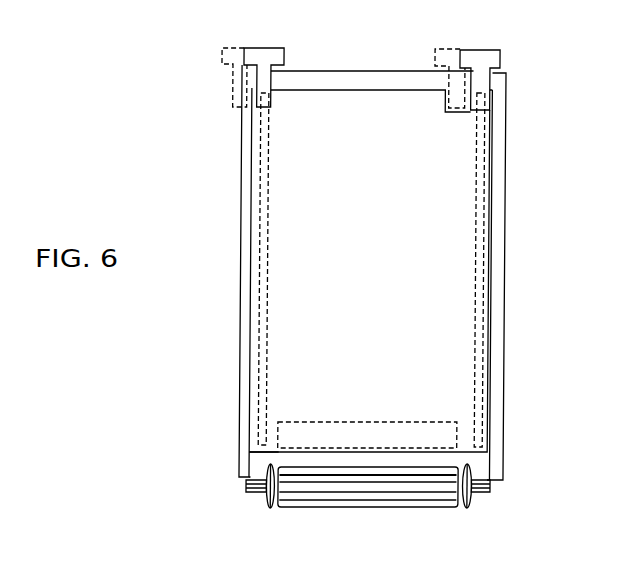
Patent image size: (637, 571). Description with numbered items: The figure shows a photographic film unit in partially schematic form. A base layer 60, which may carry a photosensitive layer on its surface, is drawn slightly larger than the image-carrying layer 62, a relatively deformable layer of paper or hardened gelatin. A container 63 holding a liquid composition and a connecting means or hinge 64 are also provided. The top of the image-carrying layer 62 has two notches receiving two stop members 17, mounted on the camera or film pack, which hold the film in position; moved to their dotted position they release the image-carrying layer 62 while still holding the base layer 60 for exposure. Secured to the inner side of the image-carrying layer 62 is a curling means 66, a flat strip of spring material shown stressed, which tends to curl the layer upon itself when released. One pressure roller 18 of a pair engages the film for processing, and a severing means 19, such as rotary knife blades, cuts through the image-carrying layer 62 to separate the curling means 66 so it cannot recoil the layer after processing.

The stop members 17 is at (272, 52).
The pressure roller 18 is at (330, 500).
The severing means 19 is at (467, 508).
The base layer 60 is at (500, 115).
The image-carrying layer 62 is at (488, 248).
The container 63 is at (436, 430).
The connecting means or hinge 64 is at (257, 457).
The curling means 66 is at (258, 168).